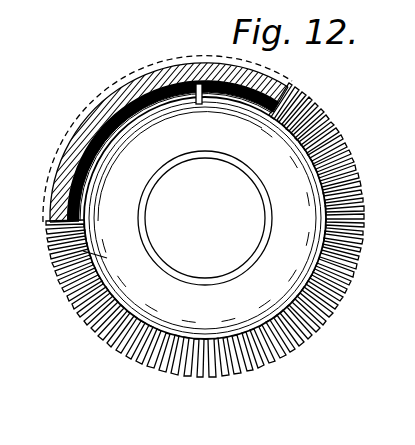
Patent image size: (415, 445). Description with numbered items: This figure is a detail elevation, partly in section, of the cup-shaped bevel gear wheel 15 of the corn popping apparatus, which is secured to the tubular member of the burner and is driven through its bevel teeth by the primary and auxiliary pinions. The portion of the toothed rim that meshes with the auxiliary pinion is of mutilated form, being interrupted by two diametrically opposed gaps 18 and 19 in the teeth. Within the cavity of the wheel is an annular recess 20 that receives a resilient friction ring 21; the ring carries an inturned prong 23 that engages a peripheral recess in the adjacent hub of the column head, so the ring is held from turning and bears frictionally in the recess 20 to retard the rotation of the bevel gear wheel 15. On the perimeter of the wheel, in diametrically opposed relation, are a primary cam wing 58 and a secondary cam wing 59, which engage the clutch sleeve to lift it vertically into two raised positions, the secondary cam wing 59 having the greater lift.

The bevel gear wheel 15 is at (52, 255).
The mutilation or gap 18 is at (177, 92).
The mutilation or gap 19 is at (212, 348).
The annular recess 20 is at (123, 119).
The friction ring 21 is at (85, 174).
The inturned prong 23 is at (199, 104).
The primary cam wing 58 is at (83, 119).
The secondary cam wing 59 is at (322, 325).